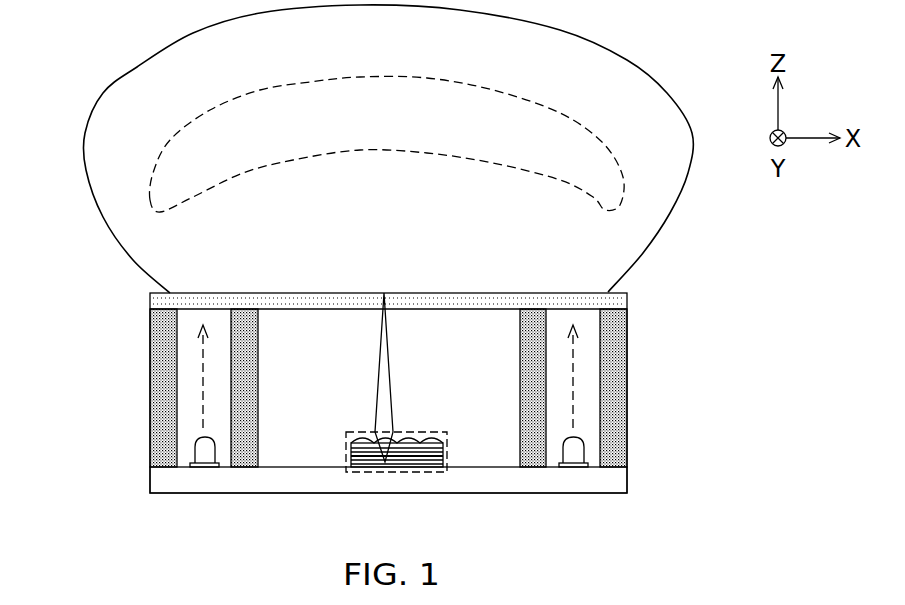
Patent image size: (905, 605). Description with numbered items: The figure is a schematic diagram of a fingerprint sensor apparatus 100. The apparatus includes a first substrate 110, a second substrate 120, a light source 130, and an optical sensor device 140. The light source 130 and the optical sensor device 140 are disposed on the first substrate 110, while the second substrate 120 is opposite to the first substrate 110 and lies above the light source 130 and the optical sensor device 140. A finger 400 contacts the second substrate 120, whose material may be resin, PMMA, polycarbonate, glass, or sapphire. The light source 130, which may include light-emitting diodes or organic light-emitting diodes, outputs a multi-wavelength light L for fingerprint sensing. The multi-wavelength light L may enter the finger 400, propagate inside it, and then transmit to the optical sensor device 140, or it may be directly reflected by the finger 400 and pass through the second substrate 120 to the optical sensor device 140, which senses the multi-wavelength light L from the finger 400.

The fingerprint sensor apparatus 100 is at (126, 367).
The first substrate 110 is at (150, 487).
The second substrate 120 is at (150, 301).
The light source 130 is at (195, 453).
The optical sensor device 140 is at (397, 473).
The finger 400 is at (100, 92).
The multi-wavelength light L is at (573, 359).